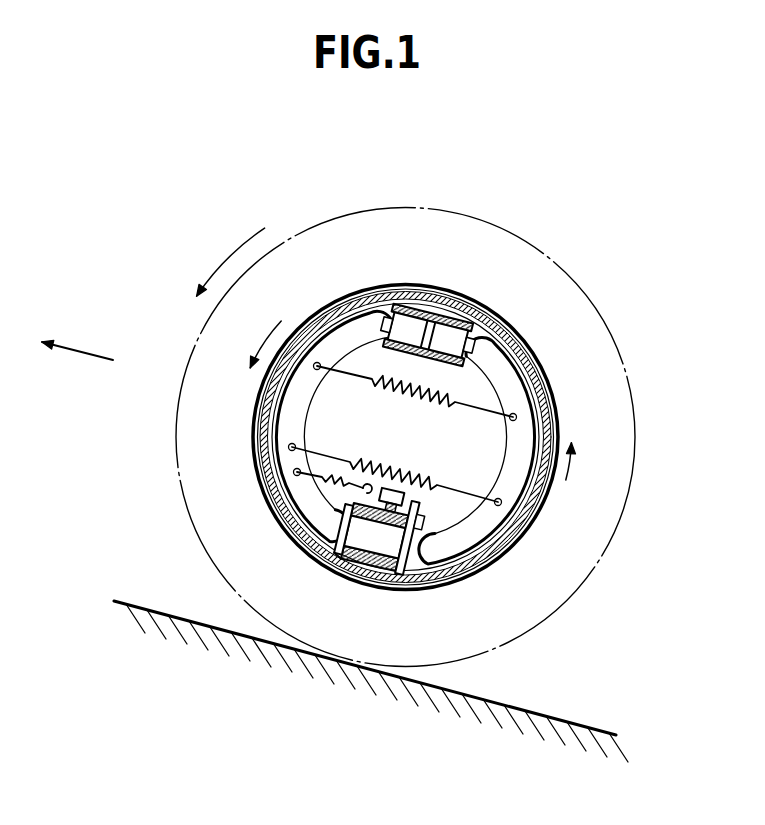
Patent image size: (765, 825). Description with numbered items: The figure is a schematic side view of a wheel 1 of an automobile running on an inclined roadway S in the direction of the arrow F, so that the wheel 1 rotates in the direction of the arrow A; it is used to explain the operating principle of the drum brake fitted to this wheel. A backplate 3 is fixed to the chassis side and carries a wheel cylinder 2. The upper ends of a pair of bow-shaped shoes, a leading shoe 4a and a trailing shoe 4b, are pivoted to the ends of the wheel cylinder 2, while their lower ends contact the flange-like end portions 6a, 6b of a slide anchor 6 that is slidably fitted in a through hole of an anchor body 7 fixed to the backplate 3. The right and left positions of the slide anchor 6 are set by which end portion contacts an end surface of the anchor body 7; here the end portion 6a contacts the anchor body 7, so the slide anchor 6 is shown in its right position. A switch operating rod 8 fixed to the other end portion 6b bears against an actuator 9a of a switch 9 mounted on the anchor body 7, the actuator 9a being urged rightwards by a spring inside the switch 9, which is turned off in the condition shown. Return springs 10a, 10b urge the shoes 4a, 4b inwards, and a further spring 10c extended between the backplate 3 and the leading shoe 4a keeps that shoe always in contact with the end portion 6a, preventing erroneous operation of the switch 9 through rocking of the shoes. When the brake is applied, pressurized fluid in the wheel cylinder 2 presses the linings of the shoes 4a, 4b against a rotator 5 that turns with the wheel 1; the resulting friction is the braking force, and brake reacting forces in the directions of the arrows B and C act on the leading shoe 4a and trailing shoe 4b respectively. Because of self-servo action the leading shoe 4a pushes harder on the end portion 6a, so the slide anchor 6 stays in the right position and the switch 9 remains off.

The wheel 1 is at (518, 208).
The wheel cylinder 2 is at (431, 318).
The backplate 3 is at (480, 390).
The leading shoe 4a is at (287, 415).
The trailing shoe 4b is at (473, 537).
The rotator 5 is at (177, 427).
The slide anchor 6 is at (380, 548).
The end portion 6a is at (338, 545).
The end portion 6b is at (413, 572).
The anchor body 7 is at (340, 566).
The switch operating rod 8 is at (428, 514).
The switch 9 is at (397, 490).
The actuator 9a is at (412, 512).
The return spring 10a is at (407, 393).
The return spring 10b is at (383, 467).
The spring 10c is at (330, 490).
The arrow A is at (234, 250).
The arrow B is at (268, 343).
The arrow C is at (570, 470).
The arrow F is at (68, 346).
The inclined roadway S is at (162, 602).